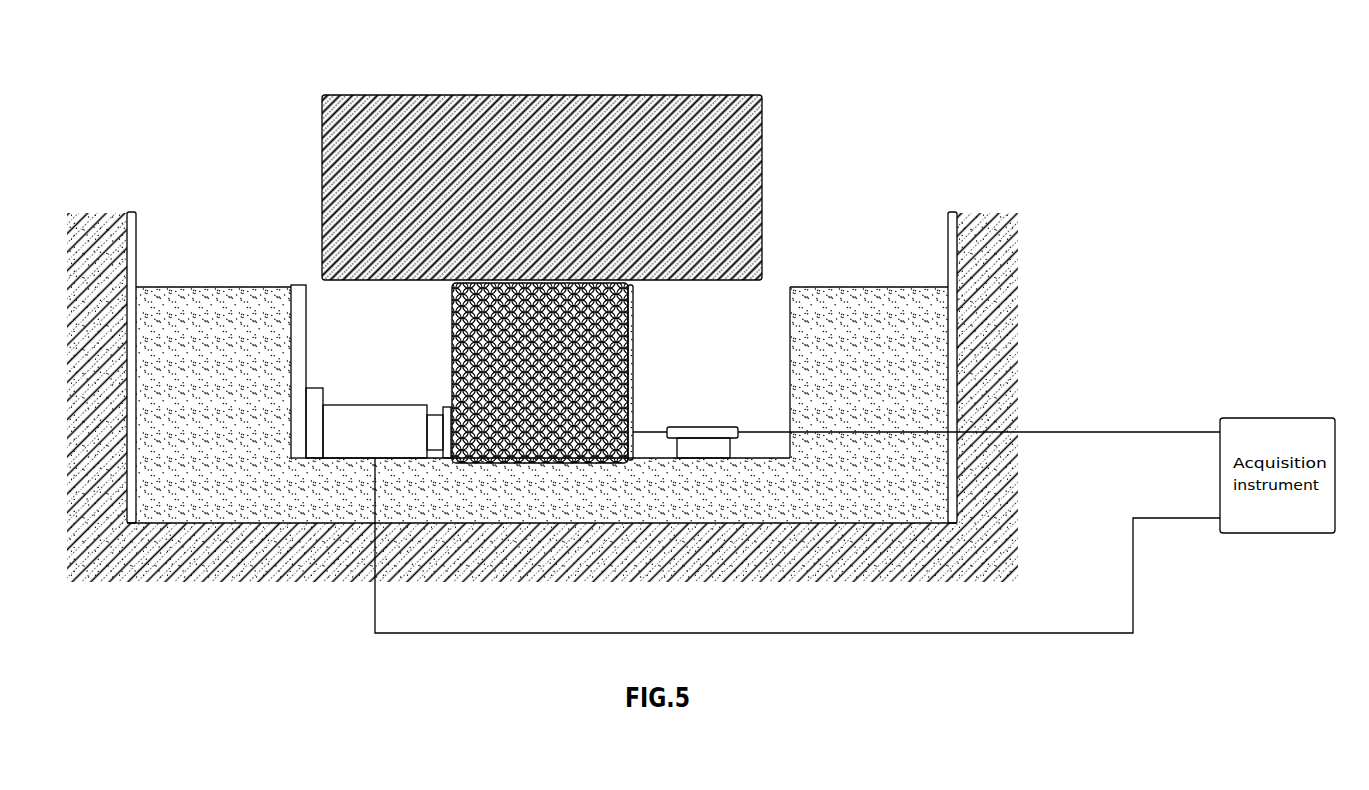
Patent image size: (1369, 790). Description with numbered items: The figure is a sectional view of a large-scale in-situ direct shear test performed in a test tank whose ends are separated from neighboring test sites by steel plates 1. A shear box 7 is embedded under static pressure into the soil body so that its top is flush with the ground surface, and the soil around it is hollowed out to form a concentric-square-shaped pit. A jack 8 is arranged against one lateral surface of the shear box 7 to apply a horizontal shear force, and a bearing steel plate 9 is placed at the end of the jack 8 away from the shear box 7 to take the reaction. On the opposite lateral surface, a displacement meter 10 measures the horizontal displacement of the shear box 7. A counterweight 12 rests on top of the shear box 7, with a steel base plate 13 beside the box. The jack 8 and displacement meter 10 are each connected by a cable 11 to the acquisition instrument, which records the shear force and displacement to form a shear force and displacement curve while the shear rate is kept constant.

The steel plate 1 is at (136, 237).
The shear box 7 is at (635, 370).
The jack 8 is at (374, 404).
The bearing steel plate 9 is at (307, 352).
The displacement meter 10 is at (703, 426).
The cable 11 is at (797, 519).
The counterweight 12 is at (518, 95).
The steel base plate 13 is at (630, 285).